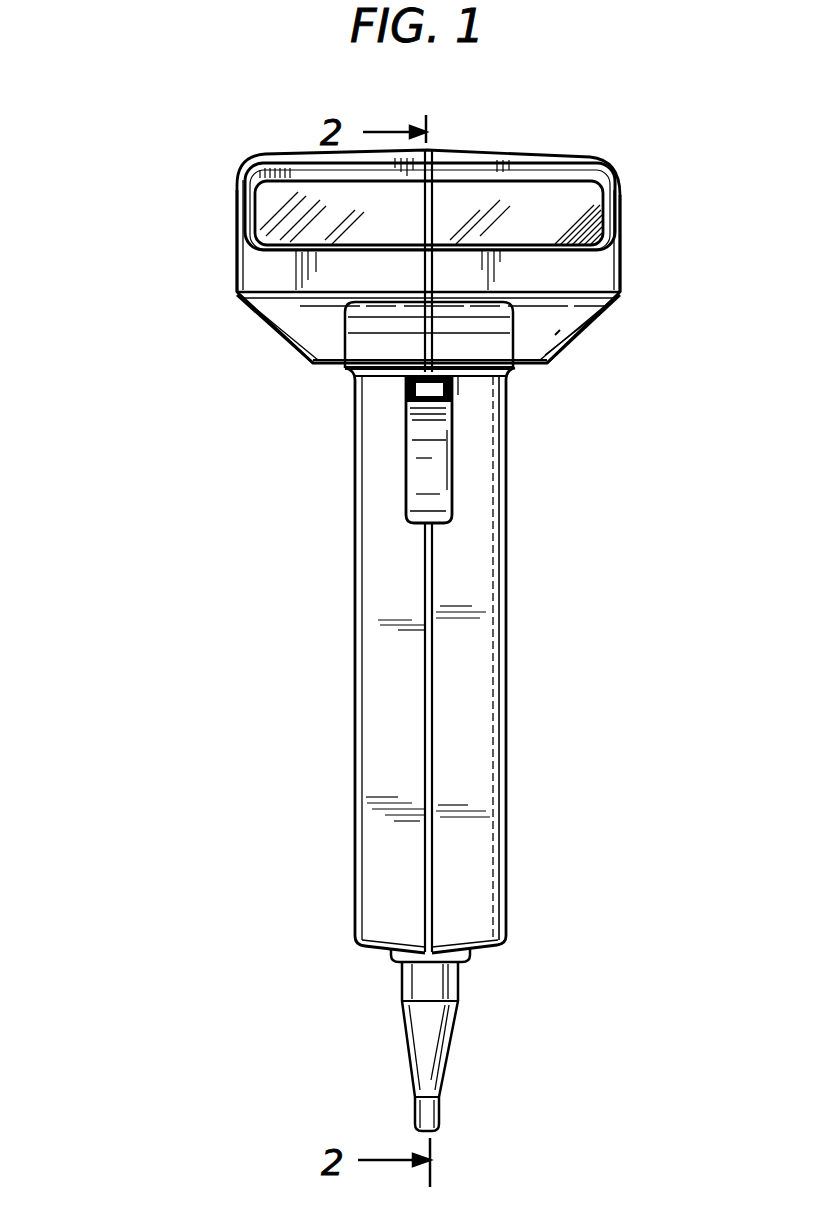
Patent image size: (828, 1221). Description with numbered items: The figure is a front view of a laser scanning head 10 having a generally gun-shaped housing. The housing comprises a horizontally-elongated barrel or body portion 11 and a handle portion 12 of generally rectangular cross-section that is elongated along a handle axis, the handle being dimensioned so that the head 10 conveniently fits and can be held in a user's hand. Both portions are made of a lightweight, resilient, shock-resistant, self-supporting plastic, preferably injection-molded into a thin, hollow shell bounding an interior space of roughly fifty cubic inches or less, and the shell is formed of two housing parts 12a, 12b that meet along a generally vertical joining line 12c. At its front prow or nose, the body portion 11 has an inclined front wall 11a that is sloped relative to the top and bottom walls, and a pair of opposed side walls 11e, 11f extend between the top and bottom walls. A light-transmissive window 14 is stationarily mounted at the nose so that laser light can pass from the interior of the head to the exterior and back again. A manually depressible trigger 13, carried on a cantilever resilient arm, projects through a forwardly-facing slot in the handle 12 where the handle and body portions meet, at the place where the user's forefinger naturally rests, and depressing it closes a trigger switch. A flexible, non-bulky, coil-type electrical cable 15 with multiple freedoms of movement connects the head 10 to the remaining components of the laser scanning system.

The head 10 is at (182, 388).
The body portion 11 is at (635, 307).
The inclined front wall 11a is at (575, 337).
The side wall 11e is at (622, 260).
The side wall 11f is at (236, 263).
The handle portion 12 is at (509, 714).
The housing part 12a is at (480, 775).
The housing part 12b is at (375, 787).
The joining line 12c is at (425, 890).
The trigger 13 is at (432, 460).
The window 14 is at (576, 206).
The electrical cable 15 is at (448, 1054).